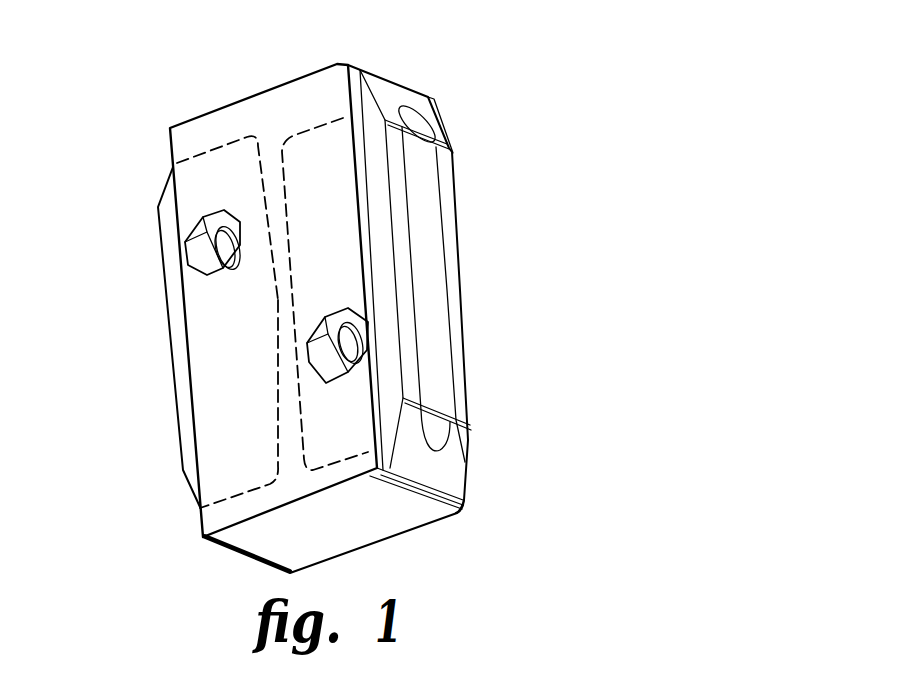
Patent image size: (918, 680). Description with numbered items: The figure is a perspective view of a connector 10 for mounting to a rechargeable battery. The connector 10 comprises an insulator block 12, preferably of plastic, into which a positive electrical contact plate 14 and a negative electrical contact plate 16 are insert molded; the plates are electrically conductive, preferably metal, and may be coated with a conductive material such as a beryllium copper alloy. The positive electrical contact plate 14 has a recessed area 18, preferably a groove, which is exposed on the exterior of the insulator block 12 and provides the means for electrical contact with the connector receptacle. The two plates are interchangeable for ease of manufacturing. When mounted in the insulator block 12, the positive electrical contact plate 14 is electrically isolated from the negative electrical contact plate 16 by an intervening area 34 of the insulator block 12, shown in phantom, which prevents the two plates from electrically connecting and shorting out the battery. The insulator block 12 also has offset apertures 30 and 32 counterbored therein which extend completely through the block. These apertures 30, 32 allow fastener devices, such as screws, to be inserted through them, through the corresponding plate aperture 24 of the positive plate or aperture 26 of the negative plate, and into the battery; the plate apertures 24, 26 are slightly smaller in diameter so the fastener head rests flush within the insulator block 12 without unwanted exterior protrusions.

The connector 10 is at (371, 59).
The insulator block 12 is at (252, 504).
The positive electrical contact plate 14 is at (336, 193).
The negative electrical contact plate 16 is at (222, 193).
The recessed area 18 is at (420, 225).
The aperture 24 is at (360, 330).
The aperture 26 is at (212, 280).
The offset aperture 30 is at (188, 262).
The offset aperture 32 is at (335, 308).
The intervening area 34 is at (287, 372).